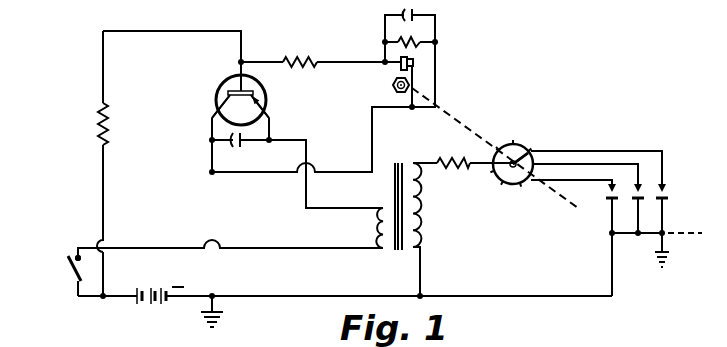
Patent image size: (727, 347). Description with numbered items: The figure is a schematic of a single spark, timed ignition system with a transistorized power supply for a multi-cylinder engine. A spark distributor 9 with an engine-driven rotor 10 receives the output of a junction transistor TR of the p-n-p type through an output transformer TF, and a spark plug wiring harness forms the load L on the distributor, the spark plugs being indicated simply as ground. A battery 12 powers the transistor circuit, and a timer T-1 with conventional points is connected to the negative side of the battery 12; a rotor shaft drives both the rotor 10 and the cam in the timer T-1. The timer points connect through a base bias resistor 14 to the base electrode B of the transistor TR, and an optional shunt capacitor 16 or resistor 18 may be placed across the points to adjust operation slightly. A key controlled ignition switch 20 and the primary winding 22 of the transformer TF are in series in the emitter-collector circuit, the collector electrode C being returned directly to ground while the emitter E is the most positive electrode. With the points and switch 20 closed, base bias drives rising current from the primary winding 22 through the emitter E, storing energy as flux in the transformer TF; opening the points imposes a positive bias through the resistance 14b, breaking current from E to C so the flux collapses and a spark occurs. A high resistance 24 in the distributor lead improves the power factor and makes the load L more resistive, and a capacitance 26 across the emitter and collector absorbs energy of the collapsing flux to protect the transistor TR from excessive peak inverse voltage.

The base bias resistor 14 is at (305, 56).
The resistance 14b is at (108, 128).
The shunt capacitor 16 is at (413, 13).
The resistor 18 is at (422, 36).
The capacitance 26 is at (236, 150).
The primary winding 22 is at (379, 226).
The high resistance 24 is at (454, 171).
The rotor 10 is at (527, 144).
The spark distributor 9 is at (525, 185).
The battery 12 is at (140, 304).
The ignition switch 20 is at (67, 262).
The junction transistor TR is at (217, 92).
The base electrode B is at (235, 78).
The collector electrode C is at (215, 116).
The emitter E is at (264, 112).
The timer T-1 is at (393, 85).
The output transformer TF is at (403, 249).
The load L is at (668, 165).